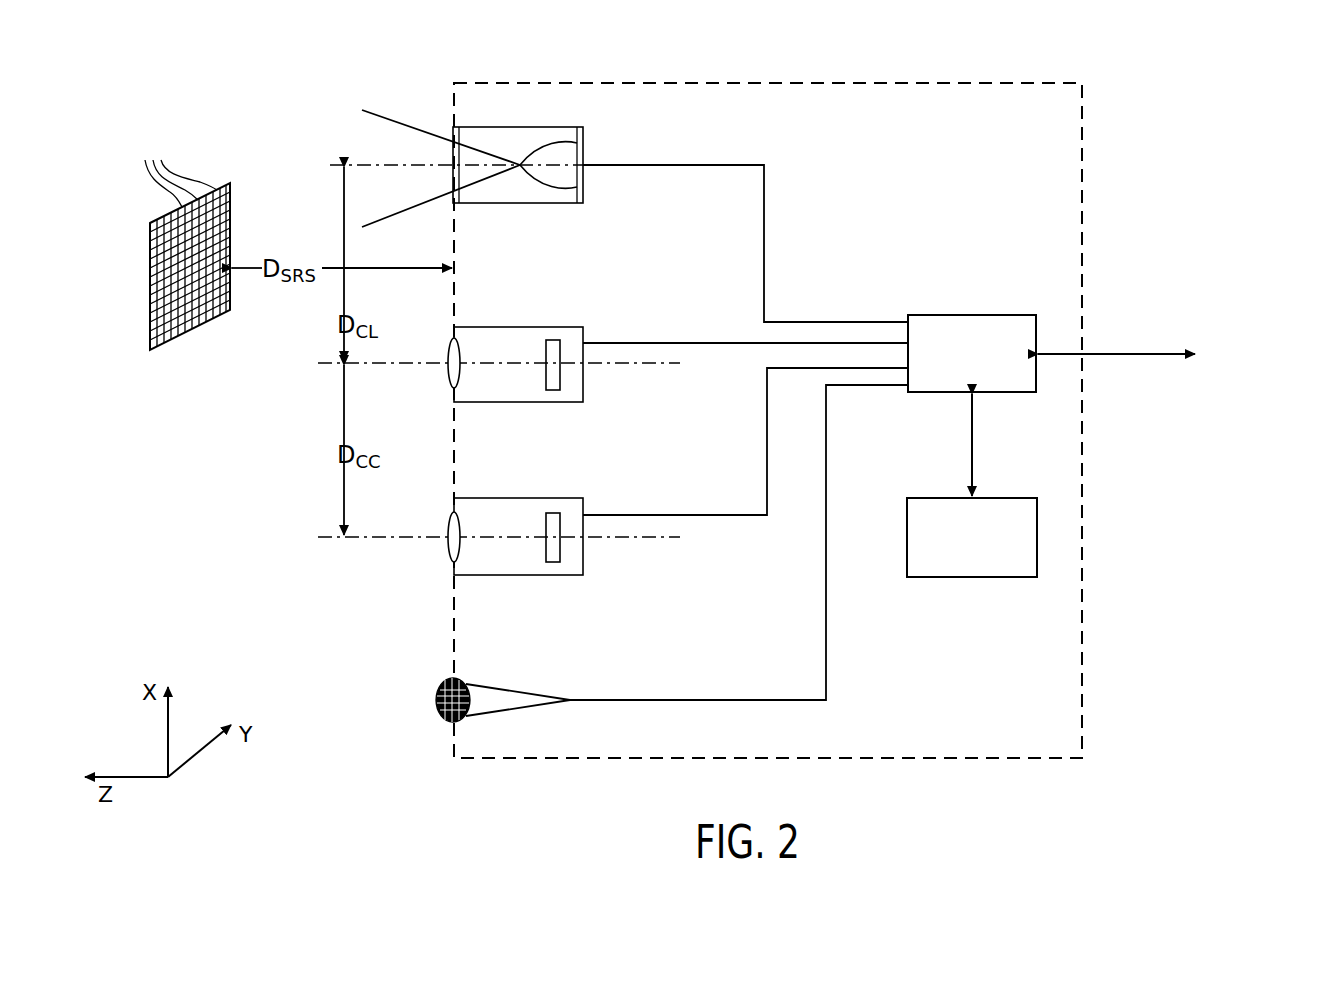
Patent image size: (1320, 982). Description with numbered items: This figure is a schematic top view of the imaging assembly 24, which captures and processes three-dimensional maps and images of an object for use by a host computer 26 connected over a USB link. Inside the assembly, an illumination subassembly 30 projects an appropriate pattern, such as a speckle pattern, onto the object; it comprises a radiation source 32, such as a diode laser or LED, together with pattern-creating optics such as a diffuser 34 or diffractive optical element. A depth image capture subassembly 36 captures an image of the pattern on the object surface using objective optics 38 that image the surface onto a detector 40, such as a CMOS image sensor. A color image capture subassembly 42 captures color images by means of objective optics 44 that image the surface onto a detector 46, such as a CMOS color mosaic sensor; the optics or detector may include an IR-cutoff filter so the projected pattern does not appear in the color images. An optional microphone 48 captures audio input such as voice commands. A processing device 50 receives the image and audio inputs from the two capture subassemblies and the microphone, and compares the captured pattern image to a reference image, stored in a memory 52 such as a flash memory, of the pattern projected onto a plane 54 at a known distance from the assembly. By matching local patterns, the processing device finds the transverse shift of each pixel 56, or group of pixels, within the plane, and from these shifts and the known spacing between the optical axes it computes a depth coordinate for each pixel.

The imaging assembly 24 is at (1082, 178).
The host computer 26 is at (1173, 359).
The illumination subassembly 30 is at (519, 127).
The radiation source 32 is at (533, 185).
The diffuser 34 is at (453, 133).
The depth image capture subassembly 36 is at (518, 327).
The objective optics 38 is at (452, 340).
The detector 40 is at (553, 390).
The color image capture subassembly 42 is at (583, 568).
The objective optics 44 is at (452, 515).
The detector 46 is at (553, 562).
The microphone 48 is at (518, 688).
The processing device 50 is at (975, 315).
The memory 52 is at (972, 577).
The plane 54 is at (230, 202).
The pixel 56 is at (174, 170).